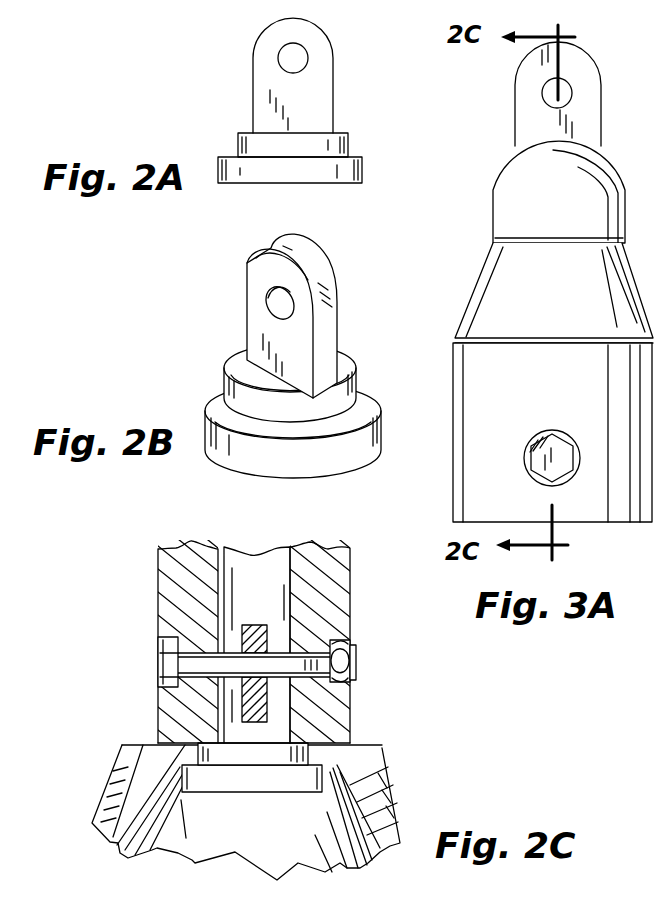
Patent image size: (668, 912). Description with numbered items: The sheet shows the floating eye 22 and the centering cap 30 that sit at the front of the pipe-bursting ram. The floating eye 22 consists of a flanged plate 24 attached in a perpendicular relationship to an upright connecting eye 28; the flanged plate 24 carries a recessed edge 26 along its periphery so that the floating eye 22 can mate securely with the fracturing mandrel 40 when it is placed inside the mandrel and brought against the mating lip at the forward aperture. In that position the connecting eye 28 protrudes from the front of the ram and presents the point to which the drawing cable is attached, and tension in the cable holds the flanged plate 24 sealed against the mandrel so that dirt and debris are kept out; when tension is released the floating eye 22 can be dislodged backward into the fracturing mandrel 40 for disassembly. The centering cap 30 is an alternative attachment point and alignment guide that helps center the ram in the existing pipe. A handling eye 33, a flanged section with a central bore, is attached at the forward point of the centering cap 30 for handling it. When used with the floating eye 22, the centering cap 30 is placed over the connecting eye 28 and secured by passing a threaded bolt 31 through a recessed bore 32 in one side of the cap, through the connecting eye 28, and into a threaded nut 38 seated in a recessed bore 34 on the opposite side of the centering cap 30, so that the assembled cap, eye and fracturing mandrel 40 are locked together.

In FIG. 2A, the floating eye 22 is at (246, 41).
In FIG. 2B, the floating eye 22 is at (226, 267).
In FIG. 2A, the flanged plate 24 is at (230, 167).
In FIG. 2B, the flanged plate 24 is at (210, 408).
In FIG. 2C, the flanged plate 24 is at (290, 782).
In FIG. 2A, the recessed edge 26 is at (247, 137).
In FIG. 2B, the recessed edge 26 is at (238, 363).
In FIG. 2C, the recessed edge 26 is at (282, 747).
In FIG. 2A, the connecting eye 28 is at (257, 77).
In FIG. 2B, the connecting eye 28 is at (248, 298).
In FIG. 2C, the connecting eye 28 is at (253, 627).
In FIG. 2C, the centering cap 30 is at (183, 562).
In FIG. 3A, the centering cap 30 is at (510, 283).
In FIG. 2C, the threaded bolt 31 is at (160, 647).
In FIG. 3A, the threaded bolt 31 is at (543, 456).
In FIG. 2C, the recessed bore 32 is at (160, 687).
In FIG. 3A, the recessed bore 32 is at (550, 430).
In FIG. 3A, the handling eye 33 is at (532, 98).
In FIG. 2C, the recessed bore 34 is at (352, 645).
In FIG. 2C, the threaded nut 38 is at (343, 625).
In FIG. 2C, the fracturing mandrel 40 is at (342, 785).